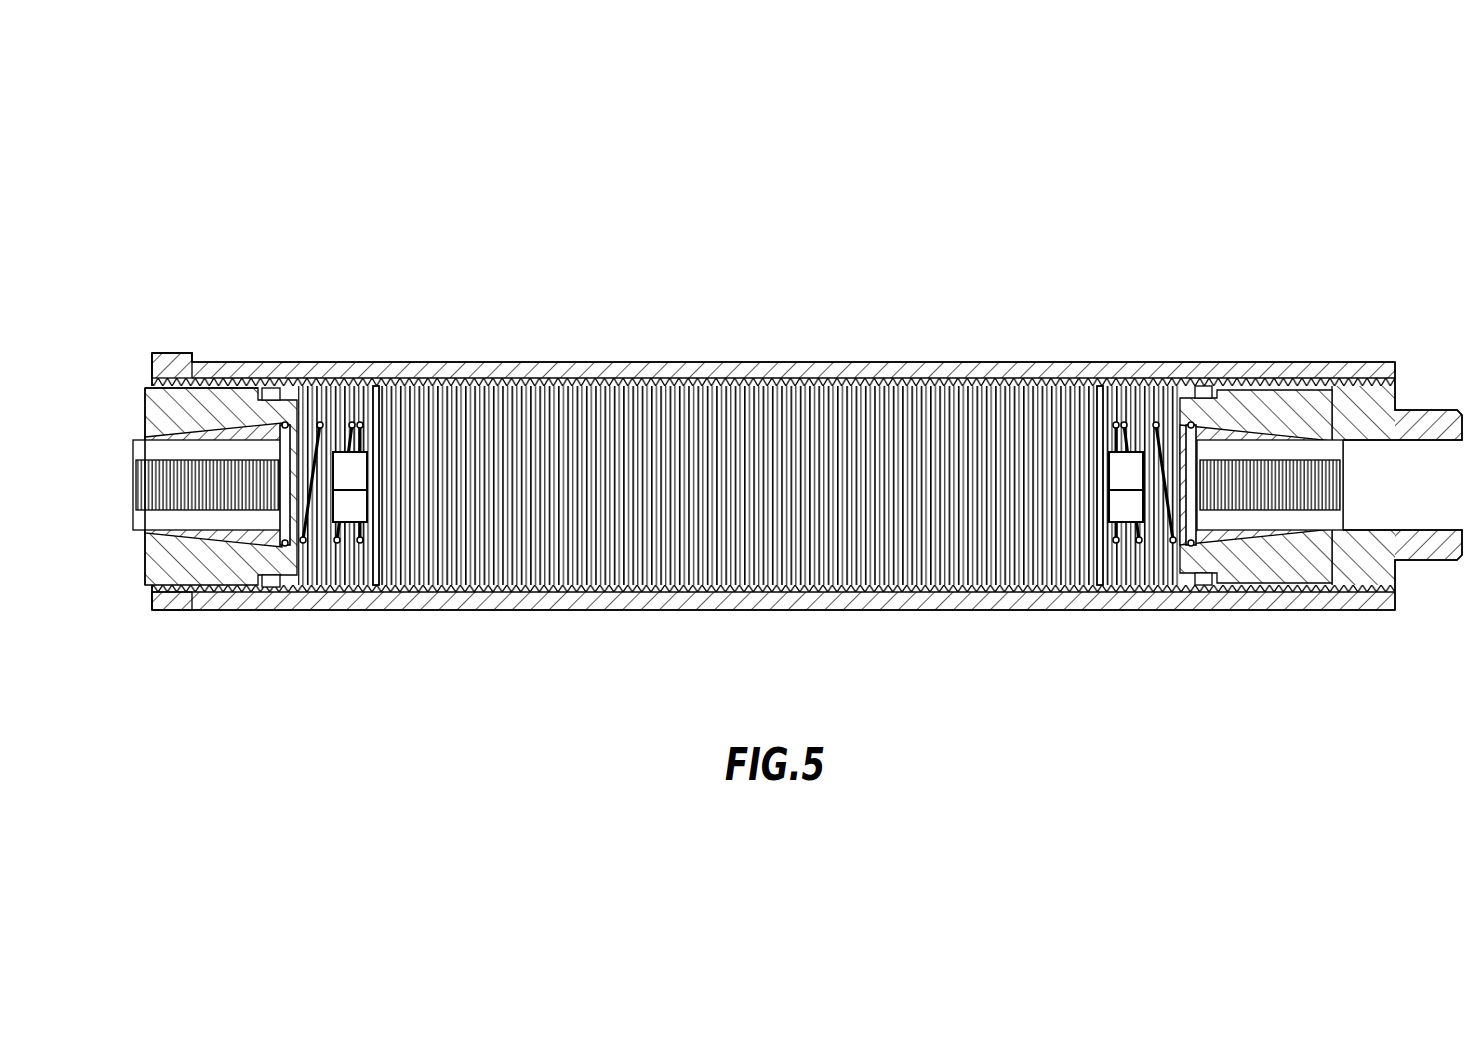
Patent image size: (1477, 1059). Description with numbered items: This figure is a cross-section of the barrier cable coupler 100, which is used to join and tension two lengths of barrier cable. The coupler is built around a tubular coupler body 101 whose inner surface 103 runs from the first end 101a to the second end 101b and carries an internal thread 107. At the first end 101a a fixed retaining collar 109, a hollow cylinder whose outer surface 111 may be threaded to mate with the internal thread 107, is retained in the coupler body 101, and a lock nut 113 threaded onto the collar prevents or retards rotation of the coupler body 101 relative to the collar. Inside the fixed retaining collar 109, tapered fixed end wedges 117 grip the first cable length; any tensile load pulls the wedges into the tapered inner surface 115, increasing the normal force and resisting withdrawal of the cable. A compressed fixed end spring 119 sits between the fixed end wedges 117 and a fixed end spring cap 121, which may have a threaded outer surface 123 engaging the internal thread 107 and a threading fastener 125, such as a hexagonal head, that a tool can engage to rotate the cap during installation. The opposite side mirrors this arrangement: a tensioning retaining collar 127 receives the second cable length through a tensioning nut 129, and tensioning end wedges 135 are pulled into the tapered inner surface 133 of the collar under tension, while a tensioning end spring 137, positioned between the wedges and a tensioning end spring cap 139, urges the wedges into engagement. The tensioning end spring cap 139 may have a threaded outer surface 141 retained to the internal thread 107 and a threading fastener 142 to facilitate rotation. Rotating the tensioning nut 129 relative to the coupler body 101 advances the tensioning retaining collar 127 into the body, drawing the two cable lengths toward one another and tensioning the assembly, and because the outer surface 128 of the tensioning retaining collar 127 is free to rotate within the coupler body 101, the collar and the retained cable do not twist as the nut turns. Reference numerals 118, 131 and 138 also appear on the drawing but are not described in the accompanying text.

The barrier cable coupler 100 is at (368, 118).
The coupler body 101 is at (748, 362).
The first end 101a is at (175, 333).
The second end 101b is at (1338, 313).
The inner surface 103 is at (642, 530).
The internal thread 107 is at (832, 550).
The fixed retaining collar 109 is at (266, 392).
The outer surface 111 is at (226, 390).
The lock nut 113 is at (177, 610).
The tapered inner surface 115 is at (222, 535).
The fixed end wedges 117 is at (153, 387).
The threaded fastener 118 is at (133, 483).
The fixed end spring 119 is at (337, 547).
The fixed end spring cap 121 is at (385, 405).
The threaded outer surface 123 is at (376, 400).
The threading fastener 125 is at (343, 452).
The tensioning retaining collar 127 is at (1230, 562).
The outer surface 128 is at (1257, 585).
The tensioning nut 129 is at (1415, 562).
The end block 131 is at (1355, 595).
The tapered inner surface 133 is at (1276, 405).
The tensioning end wedges 135 is at (1228, 440).
The tensioning end spring 137 is at (1140, 426).
The threaded fastener 138 is at (1325, 483).
The tensioning end spring cap 139 is at (1093, 418).
The threaded outer surface 141 is at (1123, 450).
The threading fastener 142 is at (1130, 547).